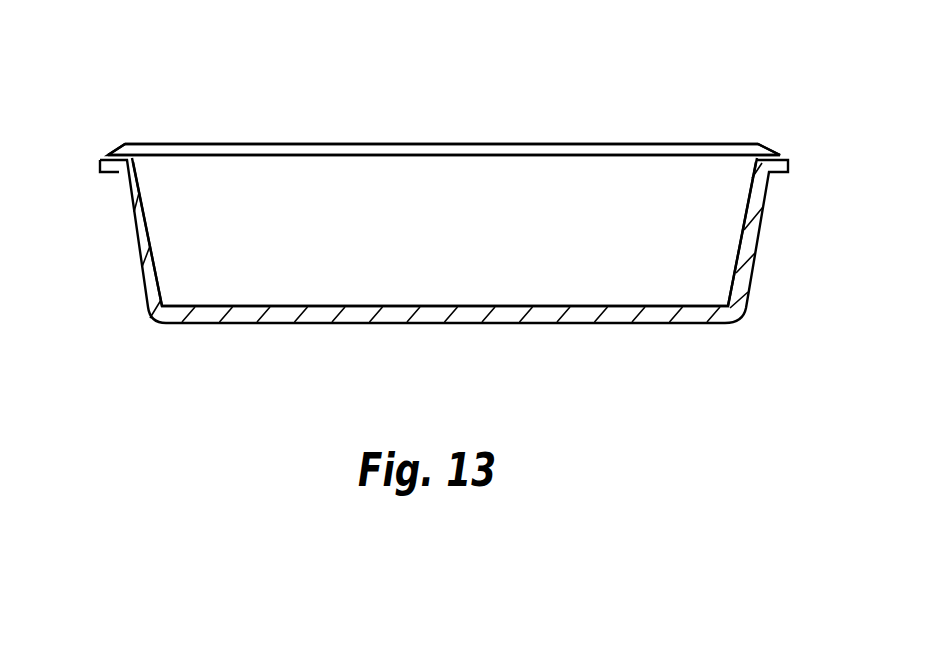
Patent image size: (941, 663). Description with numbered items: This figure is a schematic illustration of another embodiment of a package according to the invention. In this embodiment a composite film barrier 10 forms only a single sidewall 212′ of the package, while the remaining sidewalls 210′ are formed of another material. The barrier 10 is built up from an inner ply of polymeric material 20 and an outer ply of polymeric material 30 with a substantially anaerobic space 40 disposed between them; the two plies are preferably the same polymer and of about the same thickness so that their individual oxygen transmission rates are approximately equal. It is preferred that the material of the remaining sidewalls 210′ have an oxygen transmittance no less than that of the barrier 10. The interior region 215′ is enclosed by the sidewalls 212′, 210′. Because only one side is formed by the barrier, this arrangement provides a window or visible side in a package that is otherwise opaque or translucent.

The composite film barrier 10 is at (768, 143).
The inner ply of polymeric material 20 is at (191, 155).
The outer ply of polymeric material 30 is at (246, 145).
The substantially anaerobic space 40 is at (313, 150).
The single sidewall 212′ is at (492, 144).
The remaining sidewalls 210′ is at (141, 268).
The interior cavity 215′ is at (444, 234).